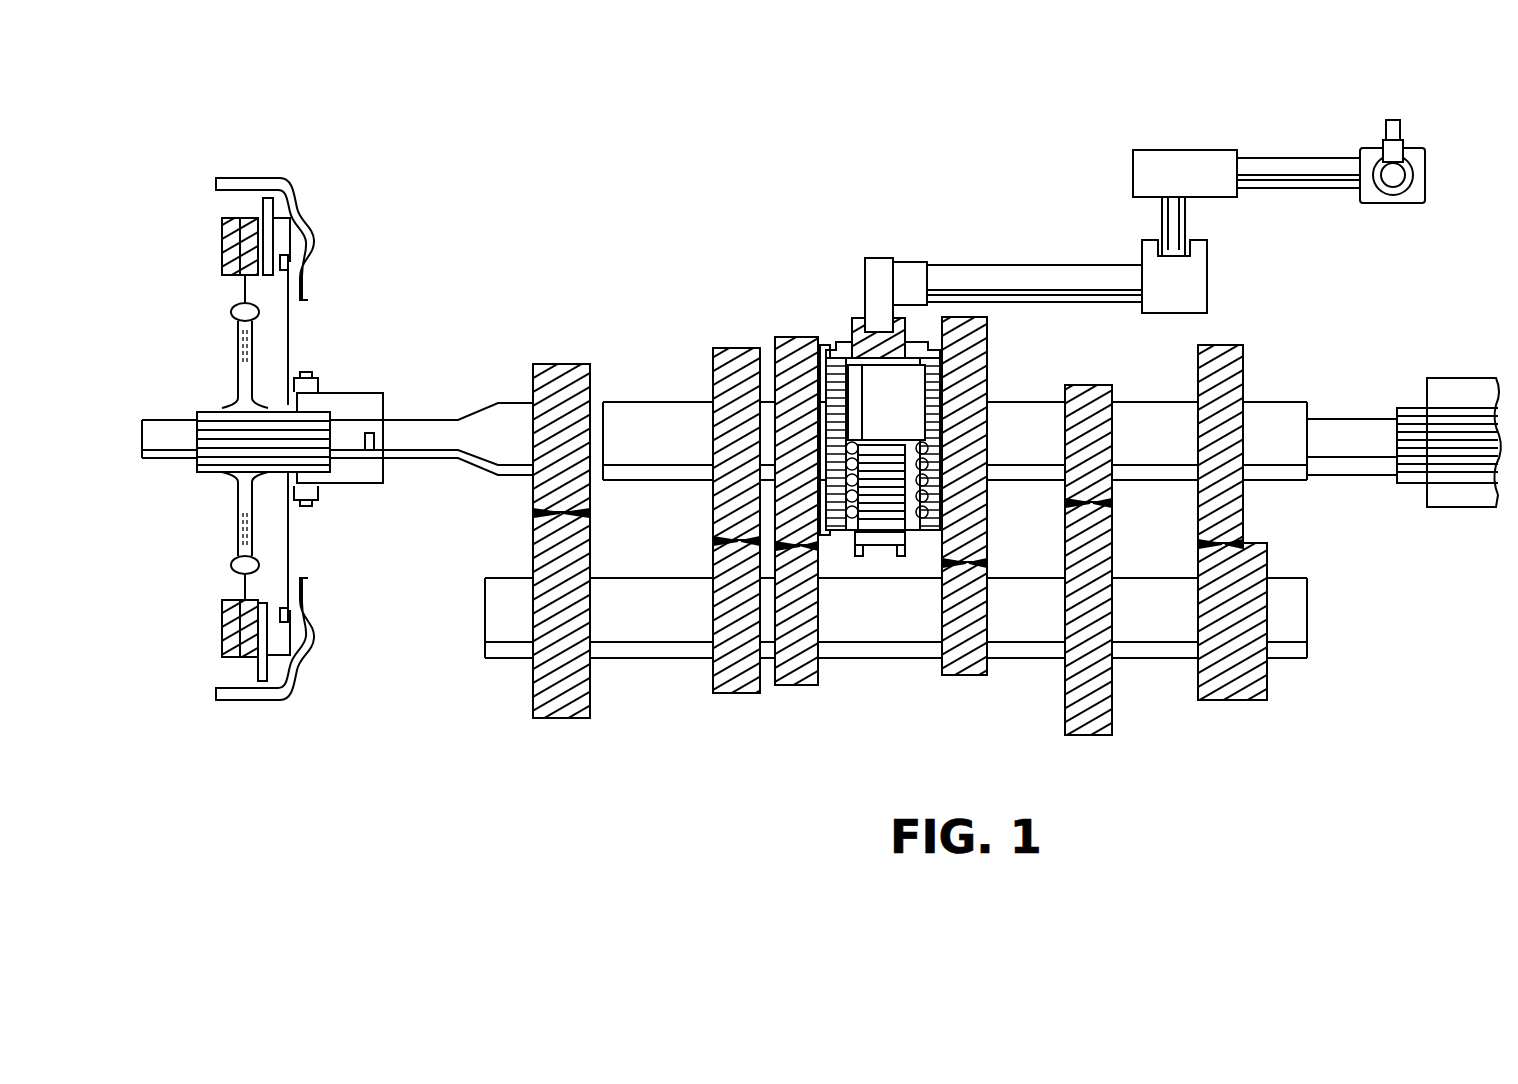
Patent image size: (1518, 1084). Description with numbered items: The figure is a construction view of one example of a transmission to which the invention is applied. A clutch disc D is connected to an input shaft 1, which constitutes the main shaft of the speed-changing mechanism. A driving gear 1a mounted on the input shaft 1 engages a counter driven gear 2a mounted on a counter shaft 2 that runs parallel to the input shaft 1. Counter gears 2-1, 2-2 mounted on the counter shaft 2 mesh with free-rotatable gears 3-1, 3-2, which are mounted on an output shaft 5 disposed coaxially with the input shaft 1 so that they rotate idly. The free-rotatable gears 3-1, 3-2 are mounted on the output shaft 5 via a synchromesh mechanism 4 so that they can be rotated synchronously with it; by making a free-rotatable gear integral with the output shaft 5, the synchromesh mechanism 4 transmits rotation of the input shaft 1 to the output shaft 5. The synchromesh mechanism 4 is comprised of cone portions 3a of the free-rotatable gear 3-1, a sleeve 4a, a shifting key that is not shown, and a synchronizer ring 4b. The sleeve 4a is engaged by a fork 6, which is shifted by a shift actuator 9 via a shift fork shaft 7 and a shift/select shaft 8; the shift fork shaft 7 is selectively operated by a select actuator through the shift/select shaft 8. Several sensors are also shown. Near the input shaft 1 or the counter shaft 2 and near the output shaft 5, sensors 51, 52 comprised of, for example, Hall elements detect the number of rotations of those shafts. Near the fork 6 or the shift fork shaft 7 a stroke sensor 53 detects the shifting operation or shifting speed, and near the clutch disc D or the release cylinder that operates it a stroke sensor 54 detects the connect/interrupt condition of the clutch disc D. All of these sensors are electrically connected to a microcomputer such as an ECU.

The clutch disc D is at (218, 345).
The stroke sensor 54 is at (353, 385).
The input shaft 1 is at (418, 440).
The sensor 51 is at (428, 482).
The driving gear 1a is at (555, 364).
The counter driven gear 2a is at (533, 685).
The counter shaft 2 is at (630, 640).
The free-rotatable gear 3-1 is at (788, 355).
The counter gear 2-1 is at (793, 685).
The cone portion 3a is at (832, 345).
The sleeve 4a is at (848, 350).
The synchronizer ring 4b is at (852, 370).
The synchromesh mechanism 4 is at (883, 531).
The fork 6 is at (880, 262).
The shift fork shaft 7 is at (1010, 270).
The stroke sensor 53 is at (1088, 255).
The shift/select shaft 8 is at (1287, 160).
The shift actuator 9 is at (1393, 120).
The free-rotatable gear 3-2 is at (975, 355).
The counter gear 2-2 is at (960, 676).
The output shaft 5 is at (1338, 428).
The sensor 52 is at (1367, 495).